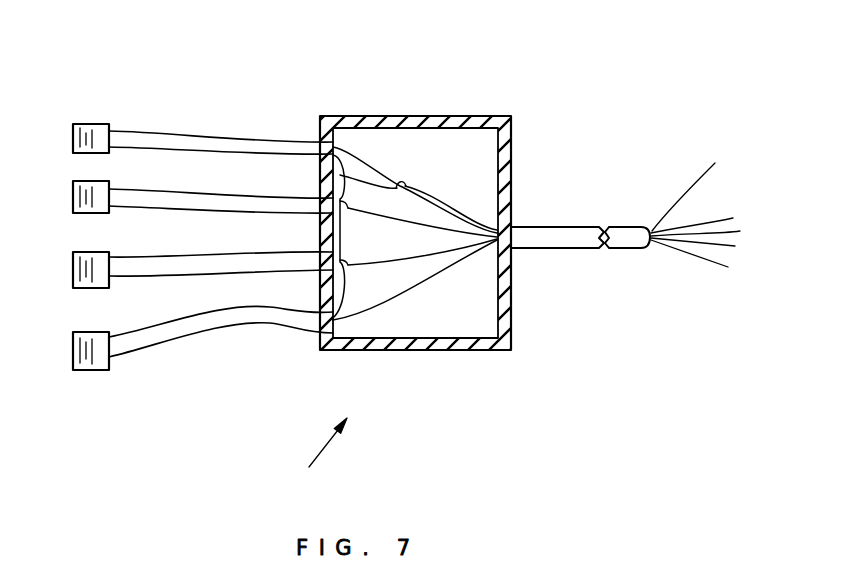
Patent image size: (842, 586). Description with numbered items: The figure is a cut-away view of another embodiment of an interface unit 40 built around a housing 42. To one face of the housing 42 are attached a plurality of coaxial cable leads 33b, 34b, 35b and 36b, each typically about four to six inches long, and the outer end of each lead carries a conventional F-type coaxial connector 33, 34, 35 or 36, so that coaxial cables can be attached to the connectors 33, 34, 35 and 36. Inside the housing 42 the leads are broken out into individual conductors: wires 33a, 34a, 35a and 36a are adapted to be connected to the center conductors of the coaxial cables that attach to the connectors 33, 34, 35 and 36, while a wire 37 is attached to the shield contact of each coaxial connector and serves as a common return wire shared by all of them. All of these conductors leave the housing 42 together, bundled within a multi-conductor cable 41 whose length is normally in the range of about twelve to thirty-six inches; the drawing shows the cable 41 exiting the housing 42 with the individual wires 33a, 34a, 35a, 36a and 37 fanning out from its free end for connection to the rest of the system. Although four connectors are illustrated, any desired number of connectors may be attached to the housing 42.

The F-type coaxial connector 33 is at (81, 124).
The F-type coaxial connector 34 is at (73, 195).
The F-type coaxial connector 35 is at (73, 262).
The F-type coaxial connector 36 is at (73, 351).
The wire 33a is at (733, 219).
The wire 34a is at (735, 230).
The wire 35a is at (724, 243).
The wire 36a is at (707, 263).
The coaxial cable lead 33b is at (215, 137).
The coaxial cable lead 34b is at (208, 199).
The coaxial cable lead 35b is at (225, 248).
The coaxial cable lead 36b is at (185, 308).
The common return wire 37 is at (343, 288).
The interface unit 40 is at (319, 455).
The multi-fiber cable 41 is at (555, 250).
The housing 42 is at (482, 118).